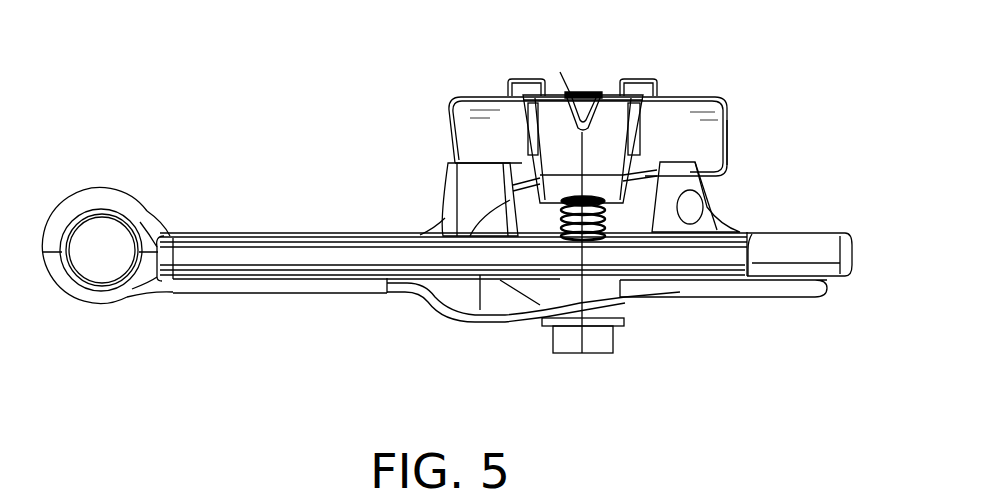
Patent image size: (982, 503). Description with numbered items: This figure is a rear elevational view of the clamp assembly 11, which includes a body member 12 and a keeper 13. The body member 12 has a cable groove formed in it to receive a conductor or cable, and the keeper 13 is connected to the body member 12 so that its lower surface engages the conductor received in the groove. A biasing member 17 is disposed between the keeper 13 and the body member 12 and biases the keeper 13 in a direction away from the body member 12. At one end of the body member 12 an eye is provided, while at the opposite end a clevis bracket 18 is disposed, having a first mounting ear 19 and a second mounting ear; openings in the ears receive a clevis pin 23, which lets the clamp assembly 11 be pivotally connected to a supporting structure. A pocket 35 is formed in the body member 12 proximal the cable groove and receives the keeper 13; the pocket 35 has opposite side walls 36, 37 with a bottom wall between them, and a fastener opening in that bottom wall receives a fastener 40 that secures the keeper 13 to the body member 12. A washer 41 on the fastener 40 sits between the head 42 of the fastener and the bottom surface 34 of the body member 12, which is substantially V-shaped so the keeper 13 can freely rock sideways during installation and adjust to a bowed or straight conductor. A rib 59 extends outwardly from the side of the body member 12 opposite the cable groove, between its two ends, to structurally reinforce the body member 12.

The clamp assembly 11 is at (302, 181).
The body member 12 is at (273, 292).
The keeper 13 is at (478, 98).
The biasing member 17 is at (520, 232).
The clevis bracket 18 is at (148, 208).
The first mounting ear 19 is at (93, 192).
The clevis pin 23 is at (98, 262).
The bottom surface 34 is at (640, 306).
The pocket 35 is at (648, 148).
The side wall 36 is at (495, 232).
The side wall 37 is at (653, 224).
The fastener 40 is at (581, 92).
The washer 41 is at (540, 322).
The head 42 is at (600, 355).
The rib 59 is at (385, 261).